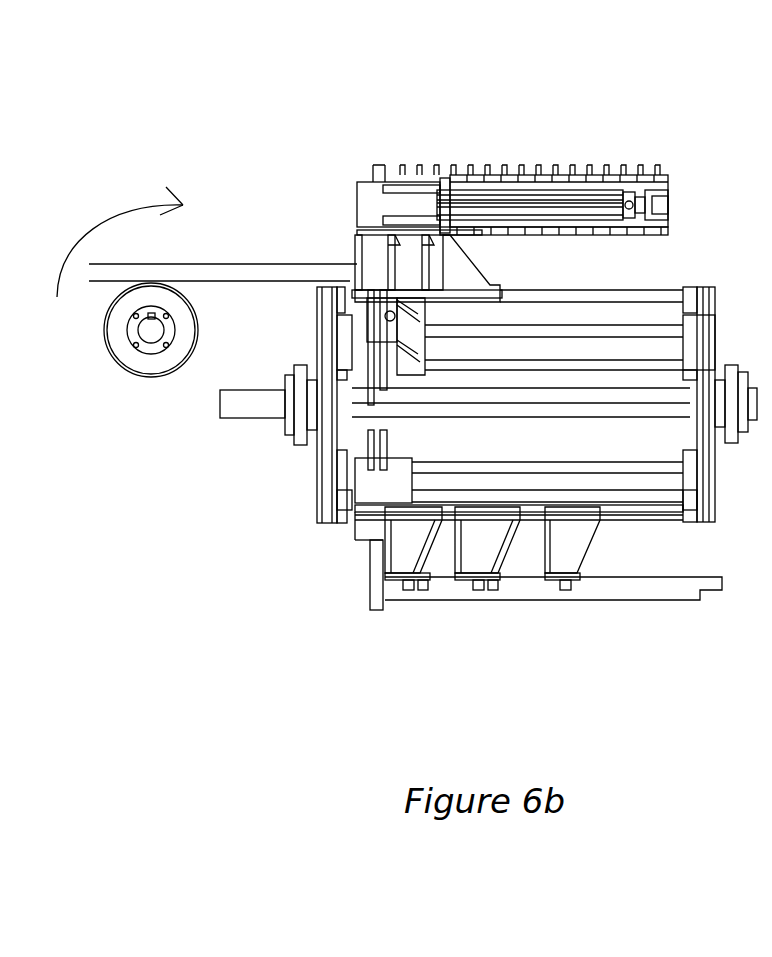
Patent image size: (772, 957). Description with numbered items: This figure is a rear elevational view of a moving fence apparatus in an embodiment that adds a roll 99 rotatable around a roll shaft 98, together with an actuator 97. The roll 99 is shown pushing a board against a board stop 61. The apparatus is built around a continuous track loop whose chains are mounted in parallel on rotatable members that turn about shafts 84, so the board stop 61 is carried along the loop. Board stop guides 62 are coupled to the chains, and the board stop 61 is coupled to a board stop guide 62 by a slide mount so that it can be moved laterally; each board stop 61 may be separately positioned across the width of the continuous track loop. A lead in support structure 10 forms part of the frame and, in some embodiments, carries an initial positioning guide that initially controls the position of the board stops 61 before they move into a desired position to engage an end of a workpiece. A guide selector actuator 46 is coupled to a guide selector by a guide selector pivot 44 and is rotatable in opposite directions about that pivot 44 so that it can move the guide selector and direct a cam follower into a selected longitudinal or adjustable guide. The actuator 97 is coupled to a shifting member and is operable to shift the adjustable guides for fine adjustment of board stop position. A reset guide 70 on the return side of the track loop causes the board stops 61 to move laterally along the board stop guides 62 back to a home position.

The lead in support structure 10 is at (375, 575).
The guide selector pivot 44 is at (570, 172).
The guide selector actuator 46 is at (650, 185).
The board stop 61 is at (468, 262).
The board stop guide 62 is at (668, 297).
The reset guide 70 is at (520, 590).
The shaft 84 is at (670, 400).
The actuator 97 is at (535, 198).
The roll shaft 98 is at (151, 333).
The roll 99 is at (116, 350).